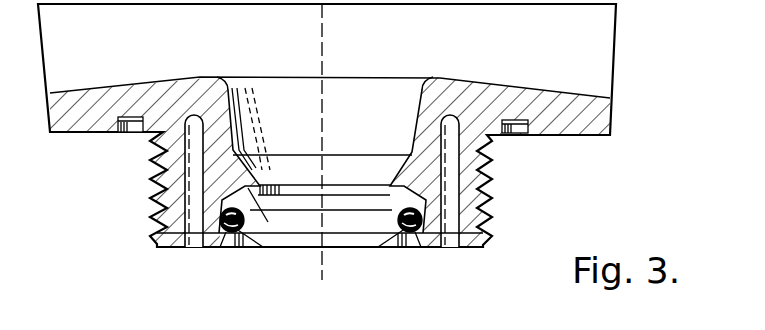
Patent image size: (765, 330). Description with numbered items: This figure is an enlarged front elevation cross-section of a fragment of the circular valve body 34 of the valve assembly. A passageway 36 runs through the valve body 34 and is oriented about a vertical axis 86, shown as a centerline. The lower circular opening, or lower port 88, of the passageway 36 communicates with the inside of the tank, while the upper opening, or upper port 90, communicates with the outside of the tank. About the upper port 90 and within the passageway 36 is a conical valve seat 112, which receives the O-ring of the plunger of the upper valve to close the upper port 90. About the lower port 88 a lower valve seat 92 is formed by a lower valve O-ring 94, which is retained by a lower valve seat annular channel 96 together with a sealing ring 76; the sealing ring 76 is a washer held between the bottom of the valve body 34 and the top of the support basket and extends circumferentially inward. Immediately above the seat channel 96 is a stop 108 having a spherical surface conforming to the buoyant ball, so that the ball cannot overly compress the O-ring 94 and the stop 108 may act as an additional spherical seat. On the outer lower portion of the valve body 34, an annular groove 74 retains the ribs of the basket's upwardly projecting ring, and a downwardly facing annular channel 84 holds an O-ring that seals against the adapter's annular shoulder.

The valve body 34 is at (133, 227).
The passageway 36 is at (338, 178).
The annular groove 74 is at (452, 219).
The sealing ring 76 is at (422, 236).
The annular channel 84 is at (128, 133).
The vertical axis 86 is at (323, 18).
The lower port 88 is at (357, 235).
The upper port 90 is at (387, 82).
The lower valve seat 92 is at (245, 228).
The lower valve O-ring 94 is at (228, 232).
The lower valve seat annular channel 96 is at (200, 243).
The stop 108 is at (268, 222).
The conical valve seat 112 is at (240, 82).